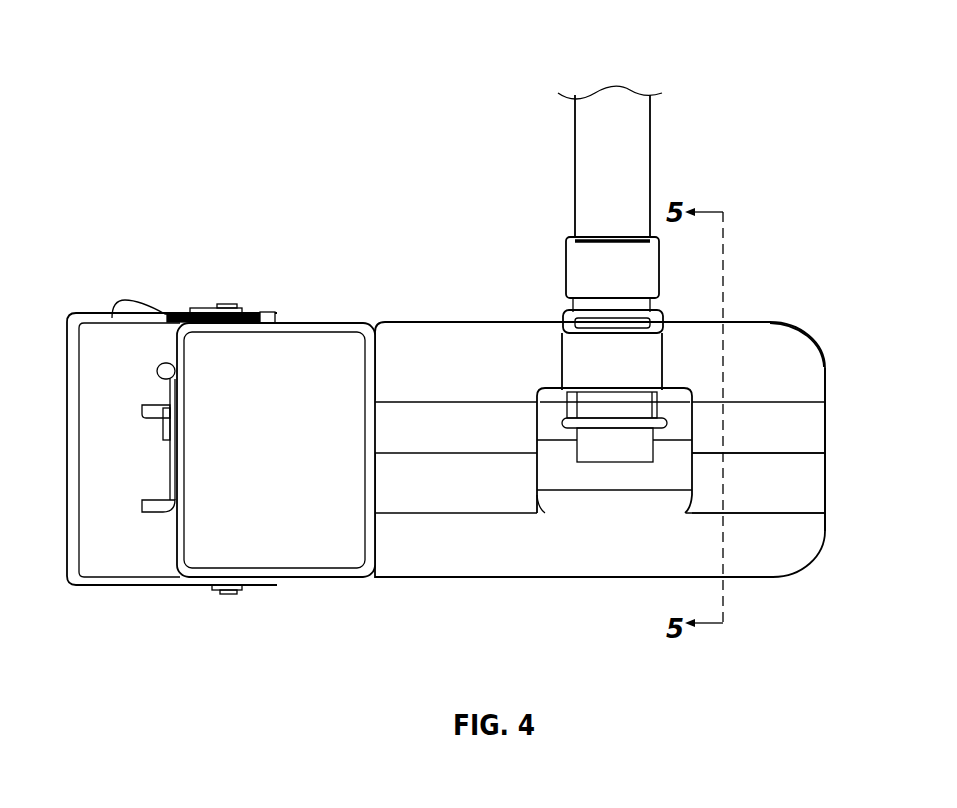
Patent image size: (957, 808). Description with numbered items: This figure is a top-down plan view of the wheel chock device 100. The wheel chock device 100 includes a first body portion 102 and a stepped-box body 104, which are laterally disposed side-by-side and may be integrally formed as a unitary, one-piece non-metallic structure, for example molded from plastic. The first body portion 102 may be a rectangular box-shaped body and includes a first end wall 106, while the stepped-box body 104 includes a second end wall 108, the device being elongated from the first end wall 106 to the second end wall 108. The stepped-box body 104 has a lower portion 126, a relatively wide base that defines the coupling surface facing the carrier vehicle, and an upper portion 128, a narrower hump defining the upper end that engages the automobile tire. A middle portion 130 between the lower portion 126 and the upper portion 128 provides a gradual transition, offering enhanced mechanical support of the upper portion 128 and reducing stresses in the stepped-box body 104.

The wheel chock device 100 is at (139, 203).
The first body portion 102 is at (375, 295).
The stepped-box body 104 is at (820, 627).
The first end wall 106 is at (180, 548).
The second end wall 108 is at (827, 398).
The lower portion 126 is at (763, 345).
The upper portion 128 is at (787, 423).
The middle portion 130 is at (807, 483).